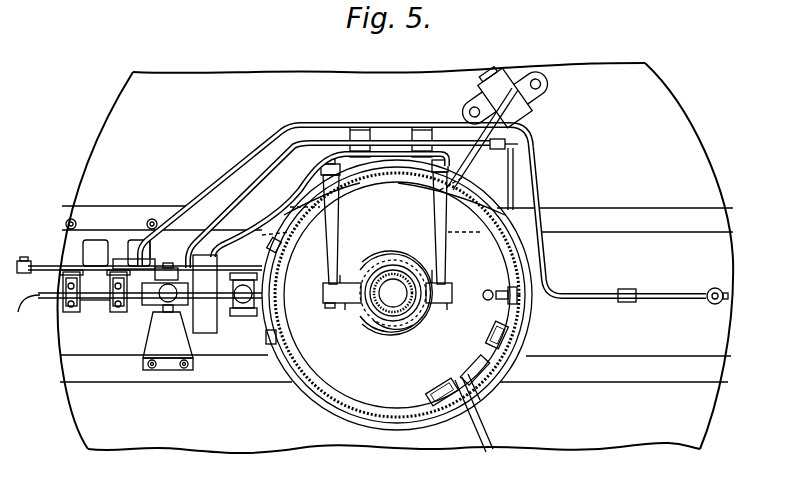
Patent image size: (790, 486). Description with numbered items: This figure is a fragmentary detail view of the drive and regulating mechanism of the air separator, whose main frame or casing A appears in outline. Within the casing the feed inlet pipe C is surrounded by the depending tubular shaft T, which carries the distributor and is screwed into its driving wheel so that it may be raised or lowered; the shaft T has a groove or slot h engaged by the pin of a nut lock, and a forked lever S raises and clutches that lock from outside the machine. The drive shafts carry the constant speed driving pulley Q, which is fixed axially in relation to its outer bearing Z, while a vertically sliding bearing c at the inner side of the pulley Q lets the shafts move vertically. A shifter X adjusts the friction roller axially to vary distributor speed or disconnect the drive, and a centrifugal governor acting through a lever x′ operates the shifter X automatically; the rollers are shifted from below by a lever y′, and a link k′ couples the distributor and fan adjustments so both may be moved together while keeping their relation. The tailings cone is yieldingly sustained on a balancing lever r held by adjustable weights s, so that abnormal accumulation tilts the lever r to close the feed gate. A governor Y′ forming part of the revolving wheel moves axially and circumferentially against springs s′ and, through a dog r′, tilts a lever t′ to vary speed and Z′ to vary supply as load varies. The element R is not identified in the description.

The main frame or casing A is at (722, 164).
The feed supplying inlet pipe C is at (405, 276).
The groove or slot h is at (378, 292).
The tubular shaft T is at (398, 325).
The lever x′ is at (430, 310).
The balancing lever r is at (627, 302).
The supply varying means Z′ is at (353, 178).
The adjustable weights s is at (291, 188).
The link k′ is at (45, 262).
The rod R is at (63, 284).
The lever y′ is at (22, 307).
The shifter X is at (108, 277).
The forked lever S is at (98, 300).
The outer bearing Z is at (153, 305).
The driving pulley Q is at (210, 333).
The vertically sliding bearing c is at (236, 316).
The lever t′ is at (488, 290).
The springs s′ is at (510, 338).
The dog r′ is at (466, 364).
The governor Y′ is at (478, 405).